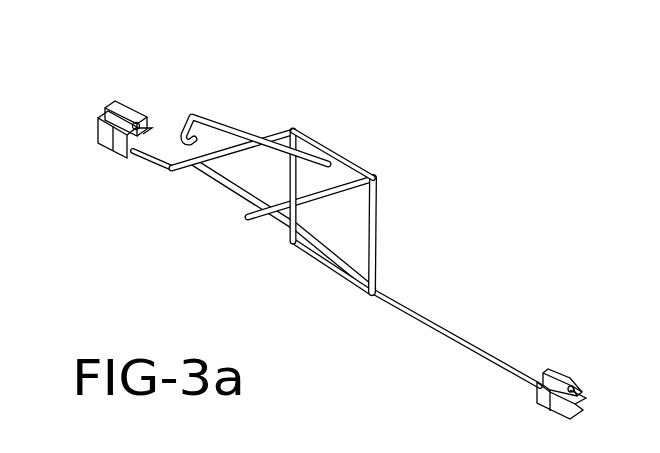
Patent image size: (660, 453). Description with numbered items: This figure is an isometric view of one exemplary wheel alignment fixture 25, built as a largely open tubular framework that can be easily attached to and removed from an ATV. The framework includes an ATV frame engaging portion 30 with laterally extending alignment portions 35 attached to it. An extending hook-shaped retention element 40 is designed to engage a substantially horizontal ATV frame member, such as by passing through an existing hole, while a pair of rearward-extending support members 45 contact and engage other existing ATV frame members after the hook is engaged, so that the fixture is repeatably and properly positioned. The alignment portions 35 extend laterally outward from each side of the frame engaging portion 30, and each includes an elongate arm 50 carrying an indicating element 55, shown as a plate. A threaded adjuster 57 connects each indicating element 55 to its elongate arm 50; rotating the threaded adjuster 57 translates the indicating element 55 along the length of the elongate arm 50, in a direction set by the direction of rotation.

The wheel alignment fixture 25 is at (453, 142).
The ATV frame engaging portion 30 is at (317, 131).
The alignment portion 35 is at (112, 162).
The hook-shaped retention element 40 is at (200, 117).
The rearward-extending support member 45 is at (178, 167).
The elongate arm 50 is at (448, 324).
The indicating element 55 is at (107, 128).
The threaded adjuster 57 is at (136, 124).